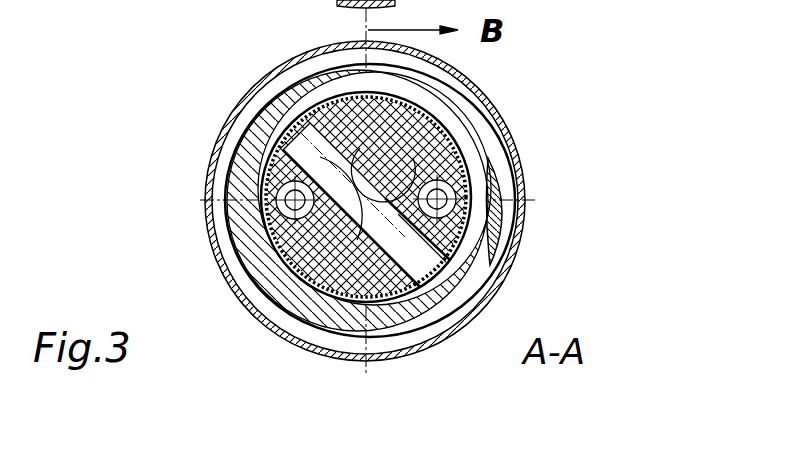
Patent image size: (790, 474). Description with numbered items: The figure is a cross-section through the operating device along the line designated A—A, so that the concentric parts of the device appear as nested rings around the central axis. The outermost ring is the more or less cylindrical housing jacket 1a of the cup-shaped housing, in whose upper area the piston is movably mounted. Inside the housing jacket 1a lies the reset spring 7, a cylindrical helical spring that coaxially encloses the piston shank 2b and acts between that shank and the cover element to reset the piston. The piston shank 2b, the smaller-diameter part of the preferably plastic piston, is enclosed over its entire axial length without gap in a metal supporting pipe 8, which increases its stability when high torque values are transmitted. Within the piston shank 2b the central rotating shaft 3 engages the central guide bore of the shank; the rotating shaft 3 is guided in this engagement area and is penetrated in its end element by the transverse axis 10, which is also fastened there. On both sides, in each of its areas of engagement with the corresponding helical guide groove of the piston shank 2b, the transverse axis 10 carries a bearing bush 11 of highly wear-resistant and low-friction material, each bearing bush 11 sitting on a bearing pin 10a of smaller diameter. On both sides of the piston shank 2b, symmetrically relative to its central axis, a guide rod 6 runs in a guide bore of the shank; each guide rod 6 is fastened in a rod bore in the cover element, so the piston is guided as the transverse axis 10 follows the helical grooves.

The housing jacket 1a is at (247, 100).
The rotating shaft 3 is at (447, 104).
The reset spring 7 is at (250, 148).
The metal supporting pipe 8 is at (263, 187).
The piston shank 2b is at (310, 240).
The guide rod 6 is at (442, 190).
The transverse axis 10 is at (400, 235).
The bearing bush 11 is at (448, 224).
The bearing pin 10a is at (423, 257).